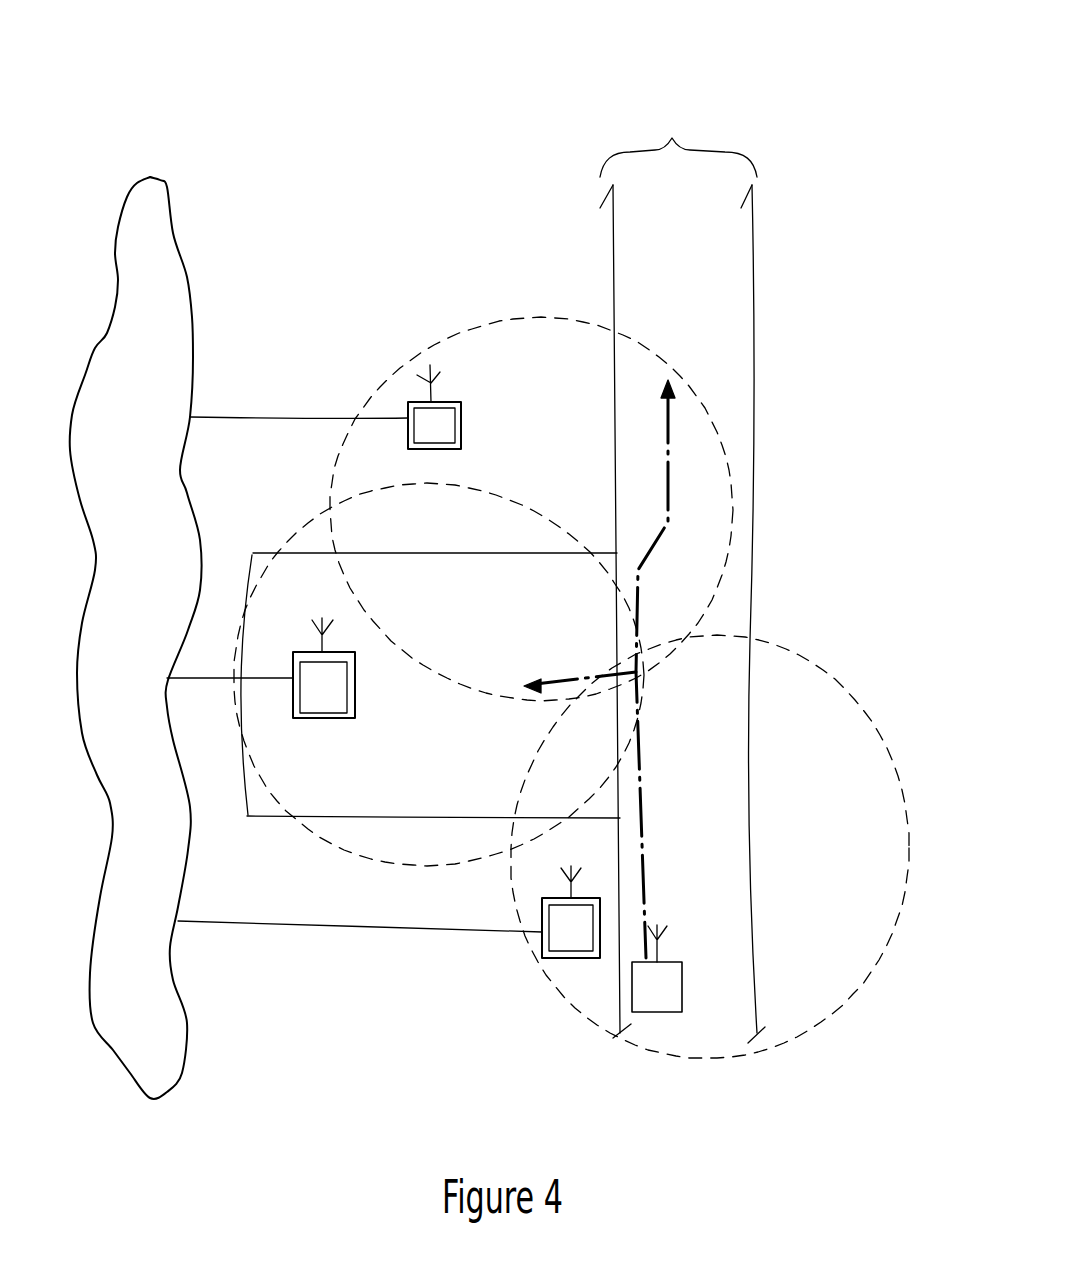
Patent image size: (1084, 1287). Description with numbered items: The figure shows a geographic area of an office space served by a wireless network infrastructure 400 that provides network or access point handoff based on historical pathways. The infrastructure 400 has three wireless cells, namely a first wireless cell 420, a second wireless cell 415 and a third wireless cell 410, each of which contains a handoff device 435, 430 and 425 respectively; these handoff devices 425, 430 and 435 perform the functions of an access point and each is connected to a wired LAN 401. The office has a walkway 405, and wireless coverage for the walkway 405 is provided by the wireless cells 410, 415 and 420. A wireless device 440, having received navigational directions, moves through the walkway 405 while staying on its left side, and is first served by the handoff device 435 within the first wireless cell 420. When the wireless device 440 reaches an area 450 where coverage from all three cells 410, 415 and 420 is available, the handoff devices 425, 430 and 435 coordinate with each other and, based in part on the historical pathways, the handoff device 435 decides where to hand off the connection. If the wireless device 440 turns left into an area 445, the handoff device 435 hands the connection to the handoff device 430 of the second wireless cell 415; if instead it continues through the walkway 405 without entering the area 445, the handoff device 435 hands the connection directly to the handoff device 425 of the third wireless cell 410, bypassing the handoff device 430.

The wireless network infrastructure 400 is at (353, 34).
The wired LAN 401 is at (155, 176).
The walkway 405 is at (682, 565).
The third wireless cell 410 is at (481, 320).
The second wireless cell 415 is at (322, 834).
The first wireless cell 420 is at (857, 692).
The handoff device 425 is at (462, 408).
The handoff device 430 is at (325, 720).
The handoff device 435 is at (575, 960).
The wireless device 440 is at (665, 1015).
The area 445 is at (405, 822).
The area 450 is at (650, 662).